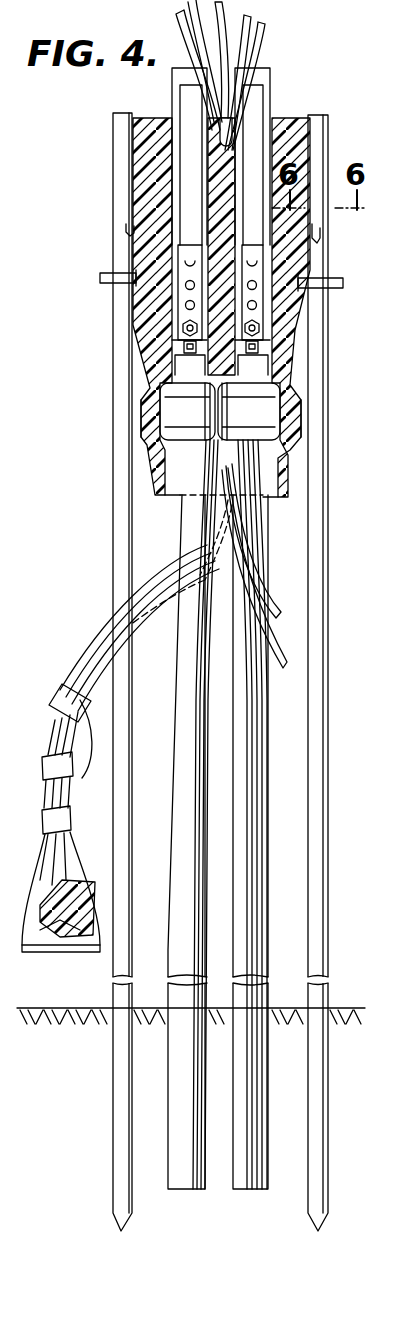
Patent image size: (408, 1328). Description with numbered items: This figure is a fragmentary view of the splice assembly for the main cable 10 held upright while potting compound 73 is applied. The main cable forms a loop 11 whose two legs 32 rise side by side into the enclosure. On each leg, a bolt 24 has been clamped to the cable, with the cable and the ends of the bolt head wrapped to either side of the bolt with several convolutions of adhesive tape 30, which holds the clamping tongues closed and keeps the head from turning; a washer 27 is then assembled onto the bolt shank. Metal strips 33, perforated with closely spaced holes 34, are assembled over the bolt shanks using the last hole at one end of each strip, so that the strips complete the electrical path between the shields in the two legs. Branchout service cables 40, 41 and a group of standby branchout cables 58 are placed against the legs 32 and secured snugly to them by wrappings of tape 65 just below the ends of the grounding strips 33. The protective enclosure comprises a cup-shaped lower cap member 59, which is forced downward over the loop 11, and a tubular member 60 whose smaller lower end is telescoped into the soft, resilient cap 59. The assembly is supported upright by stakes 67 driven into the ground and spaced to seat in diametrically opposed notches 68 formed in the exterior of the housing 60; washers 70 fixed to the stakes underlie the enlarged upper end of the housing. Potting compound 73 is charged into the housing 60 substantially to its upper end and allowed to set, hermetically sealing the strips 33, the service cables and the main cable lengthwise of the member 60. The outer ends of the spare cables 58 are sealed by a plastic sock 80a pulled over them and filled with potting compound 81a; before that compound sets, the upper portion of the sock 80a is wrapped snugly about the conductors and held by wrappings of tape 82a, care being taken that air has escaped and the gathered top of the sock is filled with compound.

The cable 10 is at (208, 850).
The loop 11 is at (278, 79).
The bolt 24 is at (182, 330).
The washer 27 is at (185, 346).
The adhesive tape 30 is at (178, 312).
The legs 32 is at (253, 514).
The metal strips 33 is at (190, 247).
The holes 34 is at (186, 286).
The service cable 40 is at (280, 644).
The service cable 41 is at (265, 608).
The standby branchout cables 58 is at (80, 660).
The lower cap member 59 is at (158, 492).
The tubular member 60 is at (218, 335).
The tape 65 is at (205, 411).
The stakes 67 is at (112, 478).
The notches 68 is at (128, 235).
The washers 70 is at (112, 278).
The potting compound 73 is at (297, 140).
The plastic sock 80a is at (80, 884).
The potting compound 81a is at (67, 923).
The tape 82a is at (60, 820).